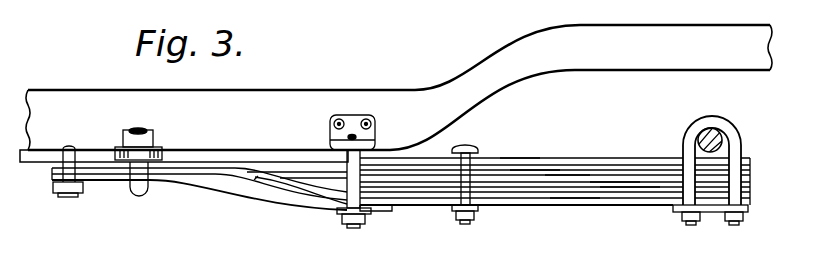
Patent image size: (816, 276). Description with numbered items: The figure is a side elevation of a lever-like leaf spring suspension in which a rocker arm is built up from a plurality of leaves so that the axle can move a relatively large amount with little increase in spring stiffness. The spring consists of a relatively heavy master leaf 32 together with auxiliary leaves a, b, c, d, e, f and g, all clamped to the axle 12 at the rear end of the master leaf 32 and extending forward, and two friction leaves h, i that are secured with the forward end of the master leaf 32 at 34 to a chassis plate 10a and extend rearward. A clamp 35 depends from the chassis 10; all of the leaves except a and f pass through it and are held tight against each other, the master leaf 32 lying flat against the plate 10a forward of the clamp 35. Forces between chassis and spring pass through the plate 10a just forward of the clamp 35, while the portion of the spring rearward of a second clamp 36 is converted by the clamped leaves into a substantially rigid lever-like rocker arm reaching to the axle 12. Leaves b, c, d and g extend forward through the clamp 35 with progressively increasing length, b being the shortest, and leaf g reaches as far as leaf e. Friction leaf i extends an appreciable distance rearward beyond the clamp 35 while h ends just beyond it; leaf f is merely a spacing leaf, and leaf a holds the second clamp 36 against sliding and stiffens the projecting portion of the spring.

The chassis 10 is at (417, 99).
The chassis plate 10a is at (193, 150).
The axle 12 is at (707, 138).
The master leaf 32 is at (493, 166).
The securing point 34 is at (65, 197).
The clamp 35 is at (353, 188).
The second clamp 36 is at (462, 184).
The auxiliary leaf a is at (513, 160).
The auxiliary leaf b is at (525, 173).
The auxiliary leaf c is at (562, 180).
The auxiliary leaf d is at (610, 185).
The auxiliary leaf e is at (630, 190).
The spacing leaf f is at (573, 198).
The auxiliary leaf g is at (523, 203).
The friction leaf h is at (208, 186).
The friction leaf i is at (273, 193).